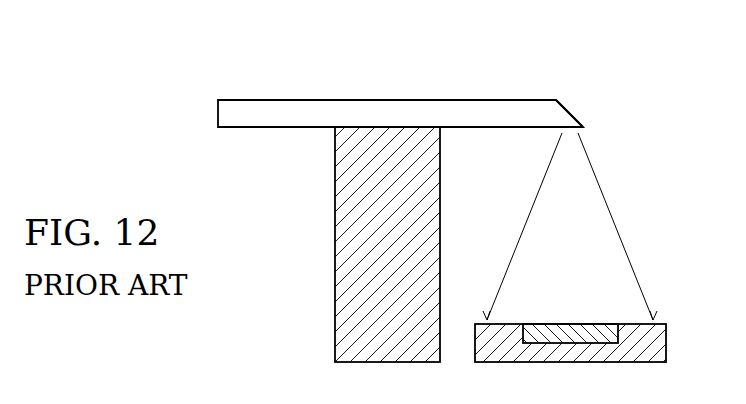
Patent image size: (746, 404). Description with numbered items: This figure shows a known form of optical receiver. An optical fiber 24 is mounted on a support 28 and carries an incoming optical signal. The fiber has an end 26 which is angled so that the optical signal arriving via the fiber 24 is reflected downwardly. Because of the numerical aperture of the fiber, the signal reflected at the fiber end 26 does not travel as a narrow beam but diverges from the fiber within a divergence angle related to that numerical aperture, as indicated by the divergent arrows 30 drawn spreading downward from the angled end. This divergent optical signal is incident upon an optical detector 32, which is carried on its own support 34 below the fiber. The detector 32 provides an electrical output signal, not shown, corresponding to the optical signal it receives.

The optical fiber 24 is at (308, 112).
The end 26 is at (572, 112).
The support 28 is at (352, 188).
The divergent arrows 30 is at (545, 180).
The optical detector 32 is at (565, 328).
The support 34 is at (659, 336).